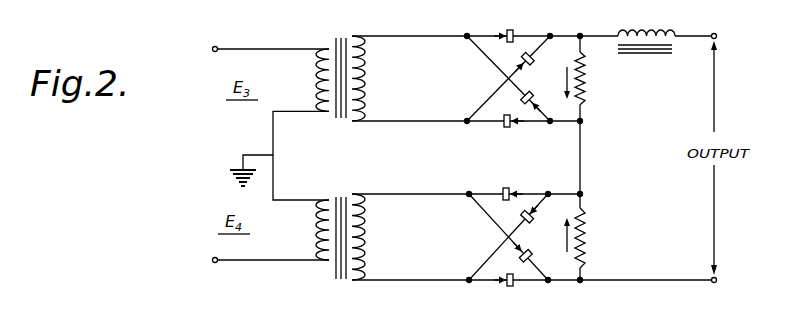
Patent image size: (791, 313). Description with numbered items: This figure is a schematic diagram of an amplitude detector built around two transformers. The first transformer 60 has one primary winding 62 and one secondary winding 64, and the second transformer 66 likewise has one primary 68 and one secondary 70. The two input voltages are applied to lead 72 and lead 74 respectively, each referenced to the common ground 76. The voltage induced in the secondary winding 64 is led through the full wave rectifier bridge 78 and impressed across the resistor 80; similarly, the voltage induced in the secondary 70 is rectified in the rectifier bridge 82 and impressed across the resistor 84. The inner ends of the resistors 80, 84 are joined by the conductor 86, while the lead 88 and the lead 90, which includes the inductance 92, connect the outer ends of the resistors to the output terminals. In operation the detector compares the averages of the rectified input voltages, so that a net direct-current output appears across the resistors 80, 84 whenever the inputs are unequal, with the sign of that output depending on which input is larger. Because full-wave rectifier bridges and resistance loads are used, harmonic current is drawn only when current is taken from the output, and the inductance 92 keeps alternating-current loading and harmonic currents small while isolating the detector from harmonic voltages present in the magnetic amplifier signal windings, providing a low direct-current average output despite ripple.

The first transformer 60 is at (338, 30).
The primary winding 62 is at (316, 69).
The secondary winding 64 is at (369, 71).
The second transformer 66 is at (332, 272).
The primary 68 is at (321, 206).
The secondary 70 is at (368, 222).
The lead 72 is at (241, 50).
The lead 74 is at (244, 262).
The common ground 76 is at (259, 154).
The full wave rectifier bridge 78 is at (496, 79).
The resistor 80 is at (585, 78).
The rectifier bridge 82 is at (493, 237).
The resistor 84 is at (588, 230).
The conductor 86 is at (583, 152).
The lead 88 is at (676, 262).
The lead 90 is at (697, 40).
The inductance 92 is at (673, 28).